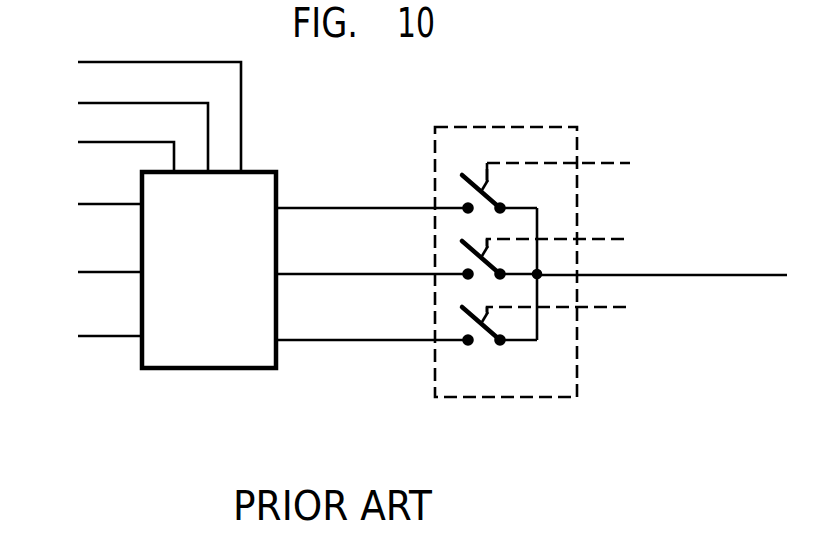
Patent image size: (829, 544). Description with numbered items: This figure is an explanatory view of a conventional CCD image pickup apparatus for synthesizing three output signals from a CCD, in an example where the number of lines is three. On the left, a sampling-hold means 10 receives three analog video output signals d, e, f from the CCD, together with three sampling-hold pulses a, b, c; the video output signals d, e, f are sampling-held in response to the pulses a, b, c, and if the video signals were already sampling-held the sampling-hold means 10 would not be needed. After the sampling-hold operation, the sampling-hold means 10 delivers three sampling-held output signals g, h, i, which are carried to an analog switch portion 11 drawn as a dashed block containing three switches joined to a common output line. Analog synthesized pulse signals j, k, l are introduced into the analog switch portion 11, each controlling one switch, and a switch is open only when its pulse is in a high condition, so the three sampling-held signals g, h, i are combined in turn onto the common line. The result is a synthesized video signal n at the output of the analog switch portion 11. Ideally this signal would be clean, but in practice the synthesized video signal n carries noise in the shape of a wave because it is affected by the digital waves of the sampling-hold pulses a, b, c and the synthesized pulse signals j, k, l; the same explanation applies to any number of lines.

The sampling-hold means 10 is at (220, 370).
The analog switch portion 11 is at (520, 398).
The sampling-hold pulse signal a is at (141, 108).
The sampling-hold pulse signal b is at (125, 128).
The sampling-hold pulse signal c is at (108, 147).
The video output signal d is at (92, 202).
The video output signal e is at (92, 272).
The video output signal f is at (92, 334).
The sampling-held output signal g is at (372, 188).
The sampling-held output signal h is at (372, 256).
The sampling-held output signal i is at (372, 322).
The synthesized pulse signal j is at (568, 171).
The synthesized pulse signal k is at (571, 239).
The synthesized pulse signal l is at (569, 307).
The synthesized video signal n is at (720, 275).